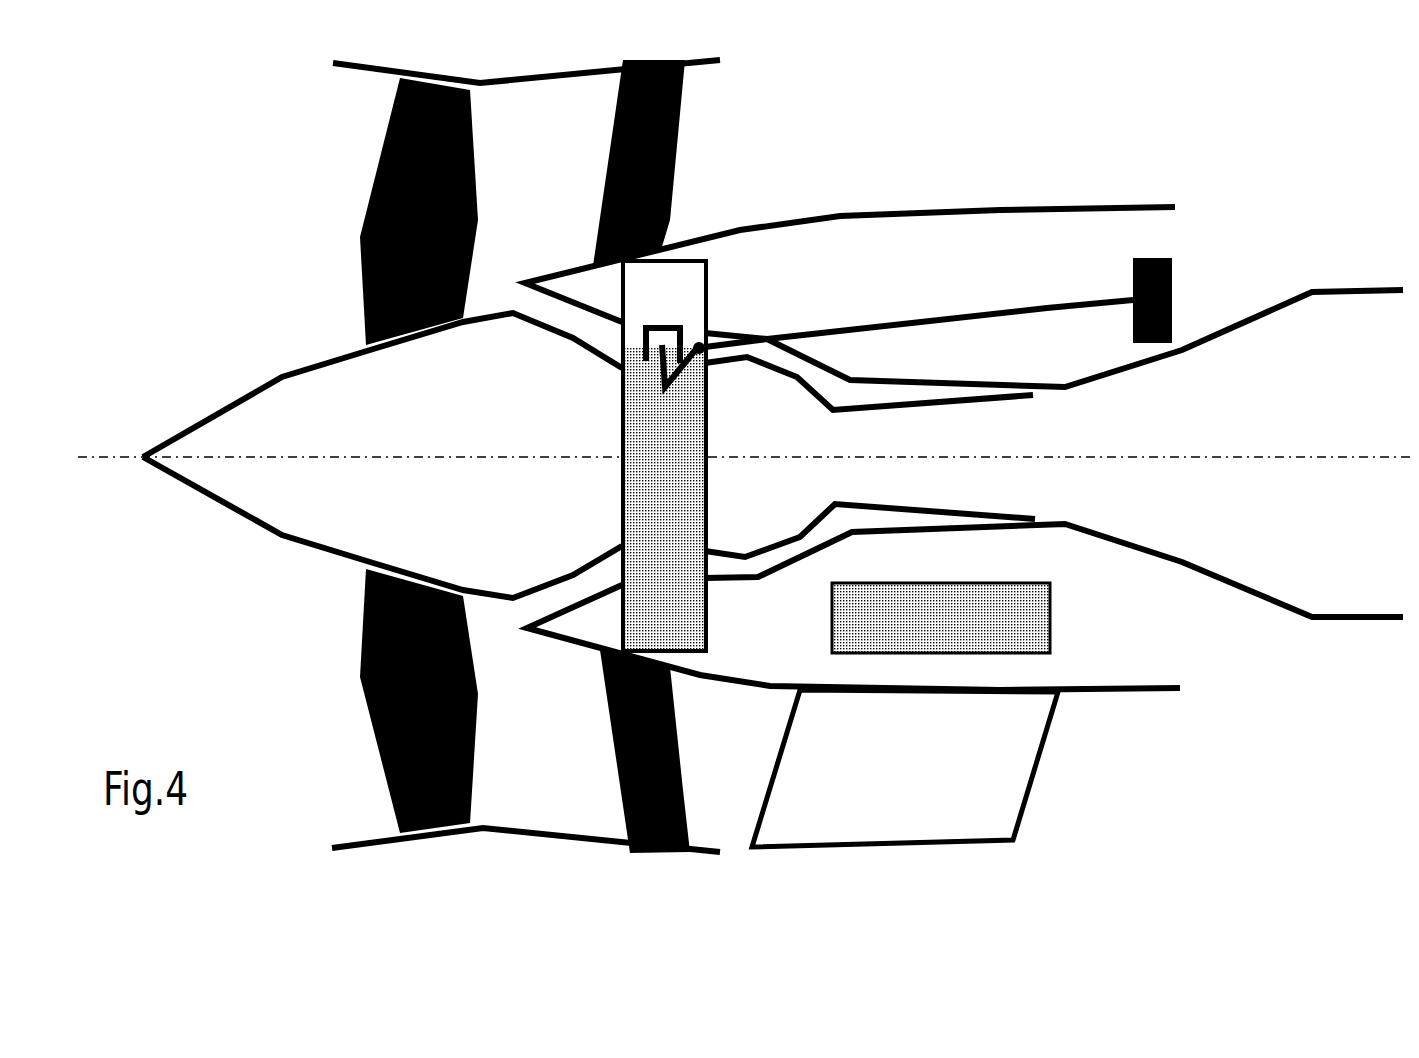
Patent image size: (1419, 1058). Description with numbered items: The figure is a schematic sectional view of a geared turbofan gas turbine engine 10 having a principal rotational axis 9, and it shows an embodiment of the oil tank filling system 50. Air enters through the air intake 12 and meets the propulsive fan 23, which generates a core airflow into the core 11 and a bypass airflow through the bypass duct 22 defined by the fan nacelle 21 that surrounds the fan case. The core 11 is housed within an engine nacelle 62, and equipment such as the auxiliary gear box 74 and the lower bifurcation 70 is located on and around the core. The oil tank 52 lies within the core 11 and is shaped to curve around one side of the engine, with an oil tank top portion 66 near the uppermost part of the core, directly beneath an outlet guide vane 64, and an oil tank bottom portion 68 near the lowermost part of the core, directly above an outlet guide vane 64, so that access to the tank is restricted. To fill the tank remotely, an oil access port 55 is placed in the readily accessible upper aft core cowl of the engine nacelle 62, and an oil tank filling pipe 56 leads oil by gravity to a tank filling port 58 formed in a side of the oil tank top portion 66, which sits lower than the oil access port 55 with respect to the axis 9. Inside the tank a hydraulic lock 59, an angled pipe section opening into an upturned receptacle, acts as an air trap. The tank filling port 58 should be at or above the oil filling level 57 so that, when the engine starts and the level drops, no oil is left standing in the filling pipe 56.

The principal rotational axis 9 is at (1253, 455).
The gas turbine engine 10 is at (1145, 122).
The core 11 is at (890, 301).
The air intake 12 is at (330, 273).
The fan nacelle 21 is at (358, 67).
The bypass duct 22 is at (541, 171).
The fan 23 is at (375, 190).
The oil tank filling system 50 is at (1220, 283).
The oil tank 52 is at (622, 407).
The oil access port 55 is at (1172, 272).
The oil tank filling pipe 56 is at (1047, 305).
The oil filling level 57 is at (707, 343).
The tank filling port 58 is at (712, 348).
The hydraulic lock 59 is at (702, 336).
The engine nacelle 62 is at (998, 207).
The outlet guide vane 64 is at (682, 110).
The oil tank top portion 66 is at (664, 320).
The oil tank bottom portion 68 is at (672, 655).
The lower bifurcation 70 is at (1028, 803).
The auxiliary gear box 74 is at (896, 639).